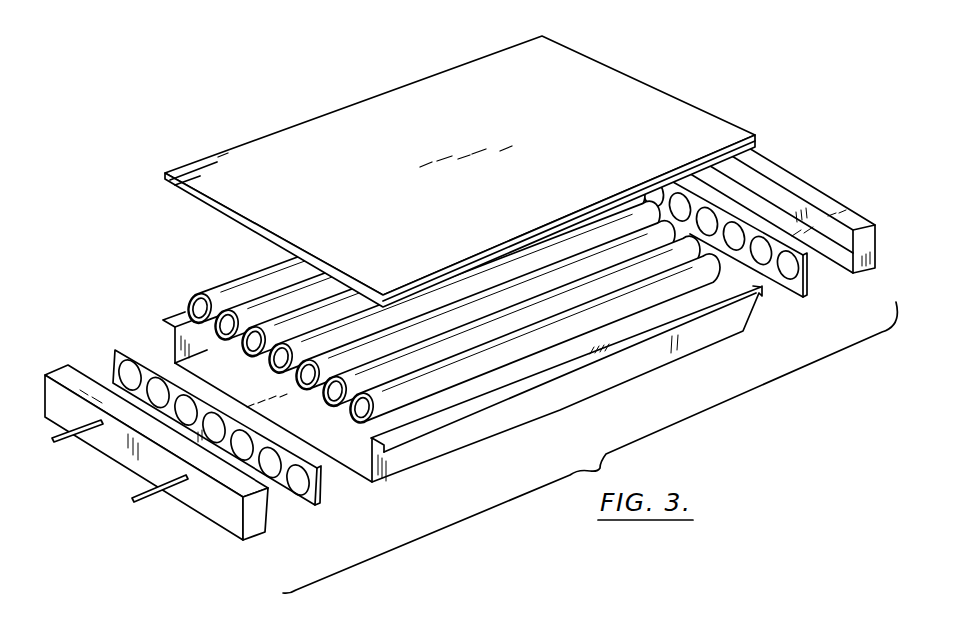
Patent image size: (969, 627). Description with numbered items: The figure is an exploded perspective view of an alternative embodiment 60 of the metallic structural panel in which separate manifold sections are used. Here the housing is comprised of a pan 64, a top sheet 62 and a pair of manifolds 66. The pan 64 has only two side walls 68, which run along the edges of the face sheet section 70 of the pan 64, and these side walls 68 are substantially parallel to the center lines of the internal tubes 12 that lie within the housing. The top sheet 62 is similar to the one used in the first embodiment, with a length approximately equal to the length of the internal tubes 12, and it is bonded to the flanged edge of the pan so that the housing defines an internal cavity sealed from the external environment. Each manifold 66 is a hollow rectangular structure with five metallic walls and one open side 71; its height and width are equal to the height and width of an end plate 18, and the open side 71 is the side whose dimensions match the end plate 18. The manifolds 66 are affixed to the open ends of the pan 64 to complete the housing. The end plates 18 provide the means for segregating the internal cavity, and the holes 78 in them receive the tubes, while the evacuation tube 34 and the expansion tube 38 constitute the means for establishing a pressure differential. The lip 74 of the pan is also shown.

The alternative embodiment of the metallic structural panel 60 is at (464, 293).
The top sheet 62 is at (384, 102).
The internal tubes 12 is at (388, 337).
The pan 64 is at (549, 418).
The side walls 68 is at (198, 337).
The face sheet section 70 is at (352, 452).
The tray lip flange 74 is at (759, 293).
The manifold 66 is at (820, 203).
The open side 71 is at (832, 243).
The end plate 18 is at (807, 294).
The holes in end plate 78 is at (735, 228).
The expansion tube 38 is at (55, 442).
The evacuation tube 34 is at (144, 505).